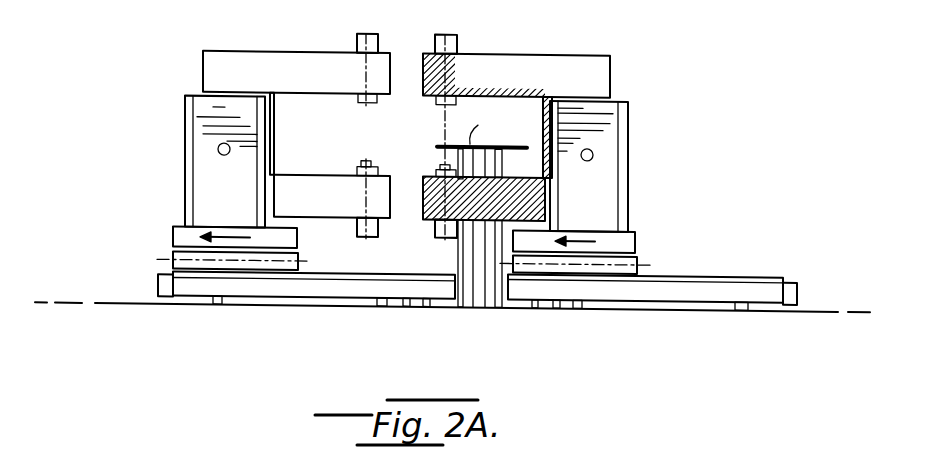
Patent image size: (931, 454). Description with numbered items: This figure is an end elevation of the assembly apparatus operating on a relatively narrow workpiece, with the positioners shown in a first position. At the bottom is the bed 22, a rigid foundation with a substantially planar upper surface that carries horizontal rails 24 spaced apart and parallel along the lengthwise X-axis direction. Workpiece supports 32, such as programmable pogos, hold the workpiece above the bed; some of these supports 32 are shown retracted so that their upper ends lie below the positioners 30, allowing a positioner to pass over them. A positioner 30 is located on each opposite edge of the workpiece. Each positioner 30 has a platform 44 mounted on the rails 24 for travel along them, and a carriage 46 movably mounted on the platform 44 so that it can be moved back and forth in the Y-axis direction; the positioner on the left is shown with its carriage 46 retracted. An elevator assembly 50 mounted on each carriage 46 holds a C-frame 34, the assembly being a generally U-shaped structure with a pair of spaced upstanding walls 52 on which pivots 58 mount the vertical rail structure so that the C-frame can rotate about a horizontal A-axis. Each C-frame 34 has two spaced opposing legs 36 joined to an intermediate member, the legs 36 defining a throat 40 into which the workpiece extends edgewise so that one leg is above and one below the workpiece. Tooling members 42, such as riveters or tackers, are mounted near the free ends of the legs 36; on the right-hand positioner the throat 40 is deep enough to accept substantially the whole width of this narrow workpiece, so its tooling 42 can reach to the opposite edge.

The bed 22 is at (112, 305).
The horizontal rails 24 is at (219, 307).
The positioner 30 is at (152, 278).
The workpiece supports 32 is at (428, 303).
The C-frame 34 is at (200, 62).
The legs 36 is at (357, 63).
The throat 40 is at (360, 132).
The tooling members 42 is at (357, 167).
The platform 44 is at (302, 298).
The carriage 46 is at (173, 253).
The elevator assembly 50 is at (203, 108).
The upstanding walls 52 is at (245, 201).
The pivots 58 is at (218, 151).